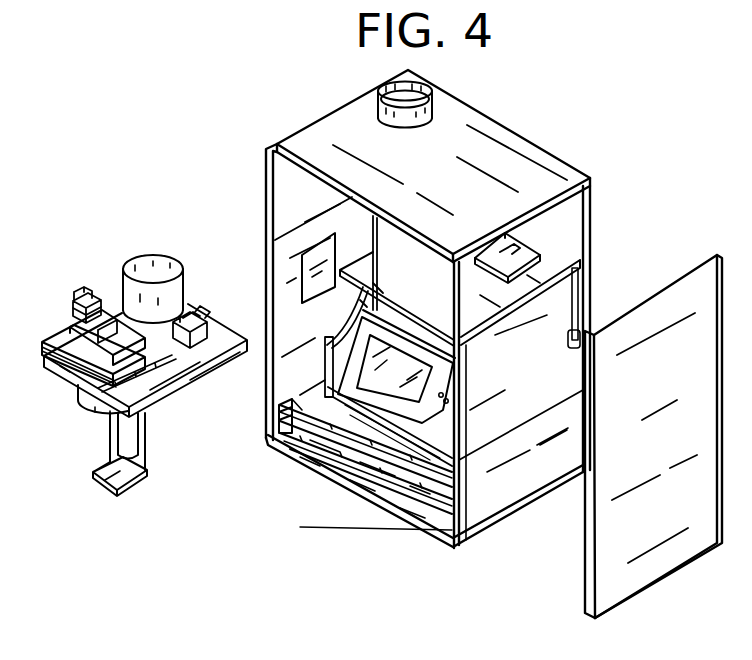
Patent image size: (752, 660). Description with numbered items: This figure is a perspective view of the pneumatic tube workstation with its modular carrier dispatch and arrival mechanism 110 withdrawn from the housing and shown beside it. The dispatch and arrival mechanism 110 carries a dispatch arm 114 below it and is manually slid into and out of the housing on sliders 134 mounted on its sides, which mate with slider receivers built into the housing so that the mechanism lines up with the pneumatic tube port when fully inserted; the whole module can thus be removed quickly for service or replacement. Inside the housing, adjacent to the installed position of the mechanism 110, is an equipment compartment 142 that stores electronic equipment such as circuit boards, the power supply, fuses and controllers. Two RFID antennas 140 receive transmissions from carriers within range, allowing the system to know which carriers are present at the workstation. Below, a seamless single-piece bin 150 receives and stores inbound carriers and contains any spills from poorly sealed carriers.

The modular carrier dispatch and arrival mechanism 110 is at (137, 396).
The dispatch arm 114 is at (130, 447).
The sliders 134 is at (188, 390).
The RFID antennas 140 is at (305, 270).
The equipment compartment 142 is at (478, 296).
The bin 150 is at (300, 378).